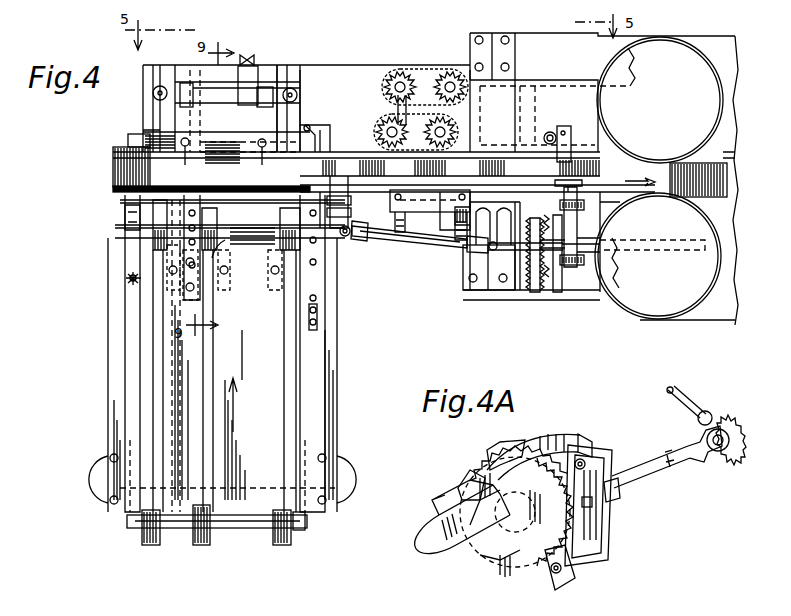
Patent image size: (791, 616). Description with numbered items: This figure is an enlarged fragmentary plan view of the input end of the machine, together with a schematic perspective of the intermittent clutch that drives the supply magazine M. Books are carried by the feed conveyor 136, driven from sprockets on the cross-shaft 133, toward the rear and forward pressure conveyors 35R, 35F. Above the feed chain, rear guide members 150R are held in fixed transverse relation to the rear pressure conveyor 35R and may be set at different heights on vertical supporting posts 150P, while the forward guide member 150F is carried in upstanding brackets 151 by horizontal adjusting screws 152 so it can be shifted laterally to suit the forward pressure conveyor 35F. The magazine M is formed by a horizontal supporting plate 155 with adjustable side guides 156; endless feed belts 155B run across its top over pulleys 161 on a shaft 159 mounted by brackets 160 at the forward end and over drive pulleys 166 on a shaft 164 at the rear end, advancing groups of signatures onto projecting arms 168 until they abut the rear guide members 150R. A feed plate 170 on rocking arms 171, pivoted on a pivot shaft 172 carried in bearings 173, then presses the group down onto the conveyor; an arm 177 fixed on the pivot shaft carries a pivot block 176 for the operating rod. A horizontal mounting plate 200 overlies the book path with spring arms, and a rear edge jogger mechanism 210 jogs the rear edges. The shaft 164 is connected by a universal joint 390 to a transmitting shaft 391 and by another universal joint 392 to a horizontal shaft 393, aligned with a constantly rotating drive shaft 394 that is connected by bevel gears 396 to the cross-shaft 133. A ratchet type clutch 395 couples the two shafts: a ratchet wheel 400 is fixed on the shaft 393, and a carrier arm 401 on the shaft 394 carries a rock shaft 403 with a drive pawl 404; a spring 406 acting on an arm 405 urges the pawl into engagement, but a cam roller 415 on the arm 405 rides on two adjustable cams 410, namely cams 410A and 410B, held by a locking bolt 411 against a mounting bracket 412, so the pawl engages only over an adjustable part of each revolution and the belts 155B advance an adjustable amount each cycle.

In FIG. 4, the rear pressure conveyor 35R is at (698, 40).
In FIG. 4, the forward pressure conveyor 35F is at (668, 326).
In FIG. 4, the feed conveyor 136 is at (113, 165).
In FIG. 4, the vertical supporting posts 150P is at (153, 95).
In FIG. 4, the rear guide members 150R is at (330, 150).
In FIG. 4, the forward guide member 150F is at (600, 184).
In FIG. 4, the upstanding brackets 151 is at (346, 203).
In FIG. 4, the horizontal adjusting screws 152 is at (354, 222).
In FIG. 4, the horizontal supporting plate 155 is at (110, 383).
In FIG. 4, the endless feed belts 155B is at (212, 352).
In FIG. 4, the adjustable side guides 156 is at (140, 322).
In FIG. 4, the shaft 159 is at (230, 528).
In FIG. 4, the brackets 160 is at (306, 533).
In FIG. 4, the pulleys 161 is at (142, 536).
In FIG. 4, the shaft 164 is at (232, 240).
In FIG. 4, the drive pulleys 166 is at (130, 210).
In FIG. 4, the projecting arms 168 is at (216, 270).
In FIG. 4, the feed plate 170 is at (212, 163).
In FIG. 4, the rocking arms 171 is at (262, 112).
In FIG. 4, the pivot shaft 172 is at (195, 90).
In FIG. 4, the bearings 173 is at (175, 72).
In FIG. 4, the pivot block 176 is at (247, 55).
In FIG. 4, the arm 177 is at (262, 87).
In FIG. 4, the horizontal mounting plate 200 is at (515, 176).
In FIG. 4, the rear edge jogger mechanism 210 is at (431, 58).
In FIG. 4, the universal joint 390 is at (360, 242).
In FIG. 4, the transmitting shaft 391 is at (390, 243).
In FIG. 4, the universal joint 392 is at (468, 252).
In FIG. 4, the horizontal shaft 393 is at (483, 290).
In FIG. 4A, the horizontal shaft 393 is at (448, 545).
In FIG. 4, the drive shaft 394 is at (587, 255).
In FIG. 4A, the drive shaft 394 is at (660, 470).
In FIG. 4, the ratchet type clutch 395 is at (547, 308).
In FIG. 4A, the ratchet type clutch 395 is at (606, 576).
In FIG. 4A, the bevel gears 396 is at (742, 416).
In FIG. 4, the ratchet wheel 400 is at (527, 268).
In FIG. 4A, the ratchet wheel 400 is at (495, 565).
In FIG. 4A, the carrier arm 401 is at (458, 486).
In FIG. 4A, the rock shaft 403 is at (548, 580).
In FIG. 4A, the drive pawl 404 is at (570, 570).
In FIG. 4A, the arm 405 is at (595, 535).
In FIG. 4A, the spring 406 is at (488, 452).
In FIG. 4, the cams 410 is at (558, 292).
In FIG. 4A, the adjustable cam 410A is at (532, 440).
In FIG. 4A, the adjustable cam 410B is at (592, 444).
In FIG. 4A, the locking bolt 411 is at (588, 465).
In FIG. 4, the mounting bracket 412 is at (580, 225).
In FIG. 4A, the cam roller 415 is at (612, 494).
In FIG. 4A, the cross-shaft 133 is at (668, 390).
In FIG. 4, the magazine M is at (352, 383).